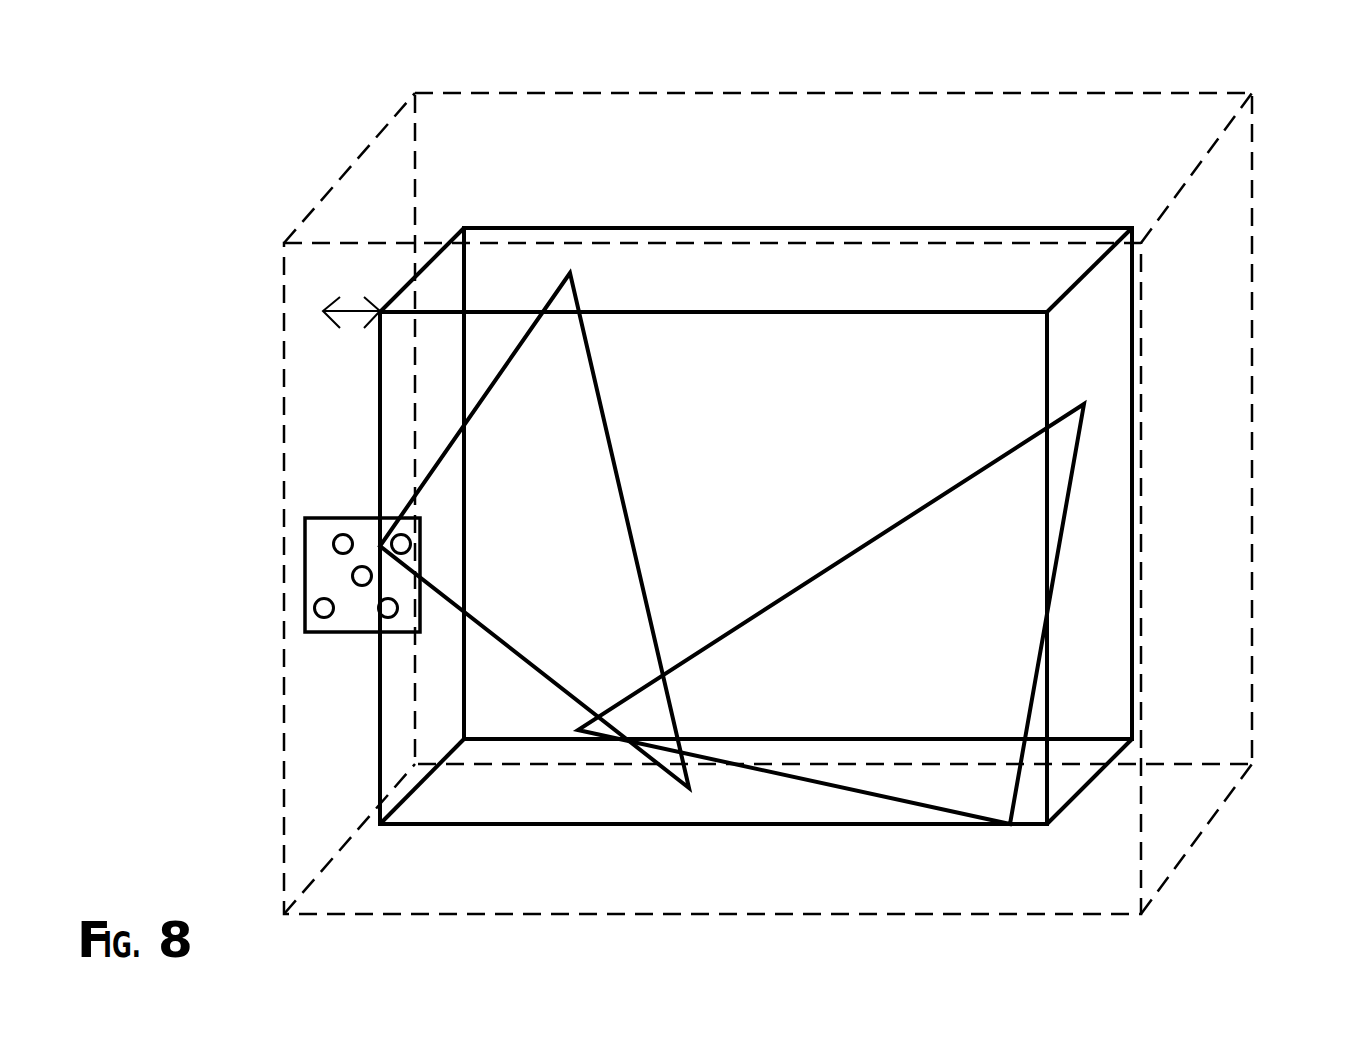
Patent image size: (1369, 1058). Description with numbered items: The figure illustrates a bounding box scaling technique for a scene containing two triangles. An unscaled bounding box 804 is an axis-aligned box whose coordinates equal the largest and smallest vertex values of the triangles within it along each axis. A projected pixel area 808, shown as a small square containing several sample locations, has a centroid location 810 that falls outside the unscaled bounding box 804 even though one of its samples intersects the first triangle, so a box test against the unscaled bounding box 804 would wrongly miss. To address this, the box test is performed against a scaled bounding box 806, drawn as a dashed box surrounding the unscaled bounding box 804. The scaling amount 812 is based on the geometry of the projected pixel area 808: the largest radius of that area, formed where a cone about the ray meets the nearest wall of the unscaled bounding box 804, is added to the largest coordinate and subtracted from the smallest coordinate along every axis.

The unscaled bounding box 804 is at (797, 226).
The scaled bounding box 806 is at (842, 912).
The projected pixel area 808 is at (355, 633).
The centroid location 810 is at (350, 575).
The scaling amount 812 is at (355, 310).